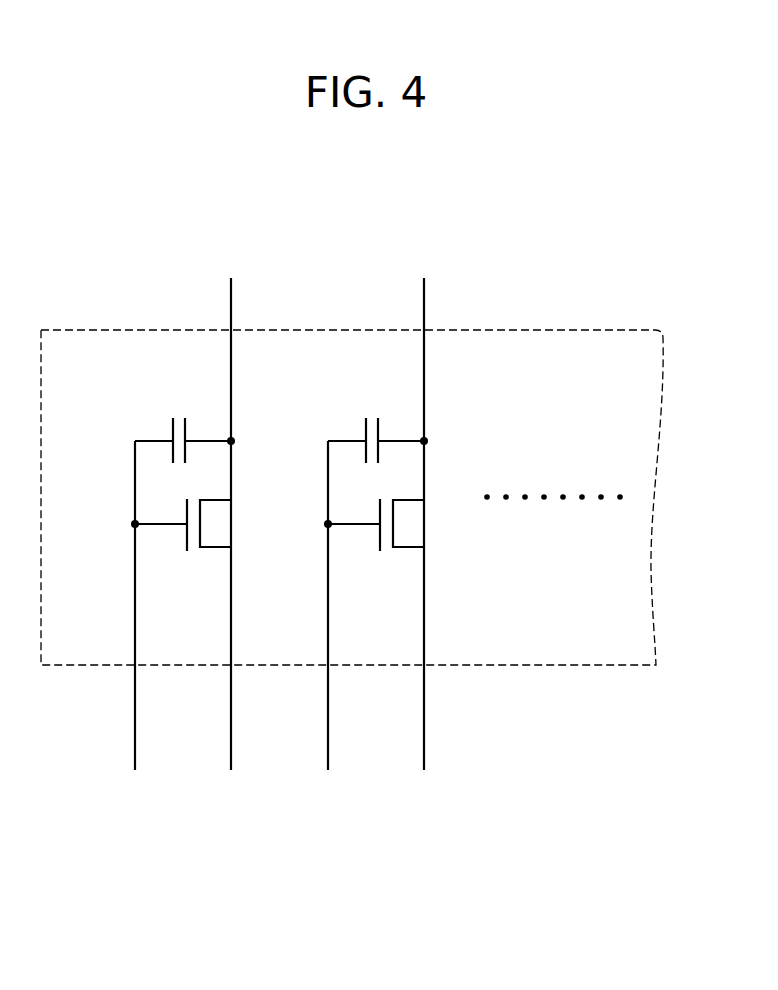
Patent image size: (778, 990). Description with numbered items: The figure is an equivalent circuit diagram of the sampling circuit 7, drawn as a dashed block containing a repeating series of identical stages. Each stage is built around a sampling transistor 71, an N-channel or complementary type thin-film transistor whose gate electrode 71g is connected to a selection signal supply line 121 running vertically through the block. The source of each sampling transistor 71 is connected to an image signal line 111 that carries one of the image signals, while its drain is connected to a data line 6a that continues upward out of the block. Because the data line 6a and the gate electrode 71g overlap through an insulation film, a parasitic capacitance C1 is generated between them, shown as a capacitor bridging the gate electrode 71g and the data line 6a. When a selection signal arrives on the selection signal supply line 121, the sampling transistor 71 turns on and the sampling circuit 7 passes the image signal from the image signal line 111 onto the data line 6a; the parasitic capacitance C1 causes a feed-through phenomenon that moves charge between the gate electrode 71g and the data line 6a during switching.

The sampling circuit 7 is at (568, 328).
The data line 6a is at (232, 293).
The image signal line 111 is at (231, 757).
The selection signal supply line 121 is at (135, 757).
The parasitic capacitance C1 is at (175, 412).
The gate electrode 71g is at (187, 507).
The sampling transistor (S-TFT) 71 is at (189, 557).